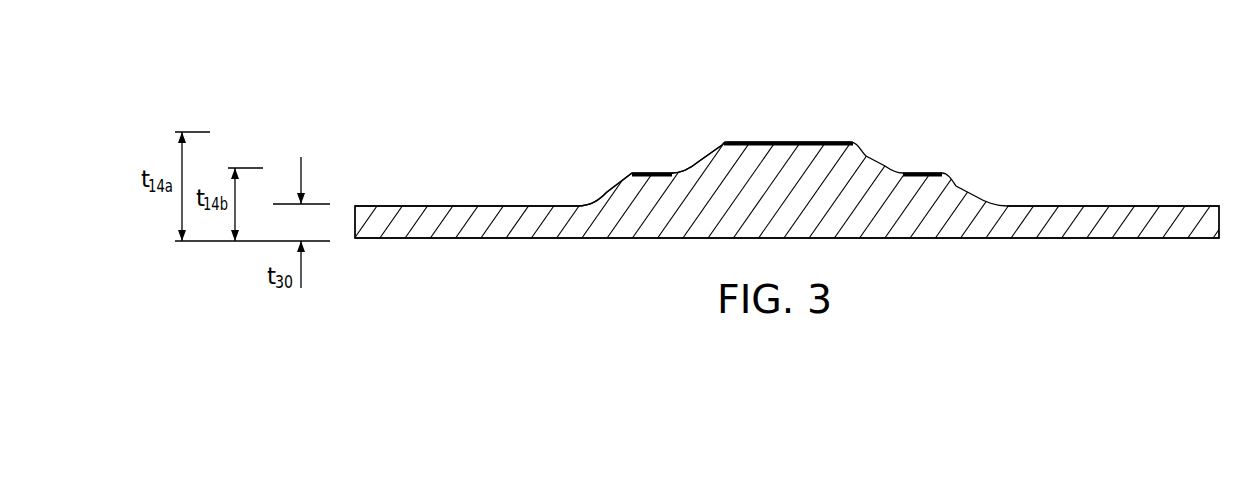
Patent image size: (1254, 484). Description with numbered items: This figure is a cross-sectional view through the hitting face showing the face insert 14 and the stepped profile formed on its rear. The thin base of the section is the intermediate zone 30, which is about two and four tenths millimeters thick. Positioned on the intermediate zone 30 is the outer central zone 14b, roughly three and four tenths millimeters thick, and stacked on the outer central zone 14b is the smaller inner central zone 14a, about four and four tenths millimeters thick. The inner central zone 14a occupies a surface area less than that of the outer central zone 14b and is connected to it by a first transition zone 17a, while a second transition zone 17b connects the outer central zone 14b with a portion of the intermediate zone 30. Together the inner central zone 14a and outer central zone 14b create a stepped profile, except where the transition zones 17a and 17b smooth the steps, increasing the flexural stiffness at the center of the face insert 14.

The face insert 14 is at (870, 54).
The inner central zone 14a is at (808, 140).
The outer central zone 14b is at (923, 170).
The first transition zone 17a is at (687, 163).
The second transition zone 17b is at (592, 200).
The intermediate zone 30 is at (1155, 205).